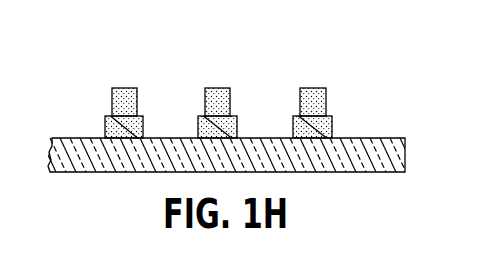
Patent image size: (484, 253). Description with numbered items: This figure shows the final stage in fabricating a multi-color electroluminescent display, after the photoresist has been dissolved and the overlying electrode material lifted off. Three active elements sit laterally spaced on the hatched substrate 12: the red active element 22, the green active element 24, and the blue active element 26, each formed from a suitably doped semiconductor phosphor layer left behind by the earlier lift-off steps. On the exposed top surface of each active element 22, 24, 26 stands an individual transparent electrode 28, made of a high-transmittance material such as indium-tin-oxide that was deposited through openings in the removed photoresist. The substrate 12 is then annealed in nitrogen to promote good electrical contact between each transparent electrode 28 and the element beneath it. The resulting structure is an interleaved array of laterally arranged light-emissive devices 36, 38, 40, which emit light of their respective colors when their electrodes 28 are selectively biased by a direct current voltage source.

The substrate 12 is at (72, 173).
The red active elements 22 is at (105, 122).
The active elements 24 is at (198, 122).
The active elements 26 is at (293, 122).
The transparent electrode 28 is at (118, 88).
The light-emissive device 36 is at (108, 88).
The light-emissive device 38 is at (200, 88).
The light-emissive device 40 is at (298, 88).